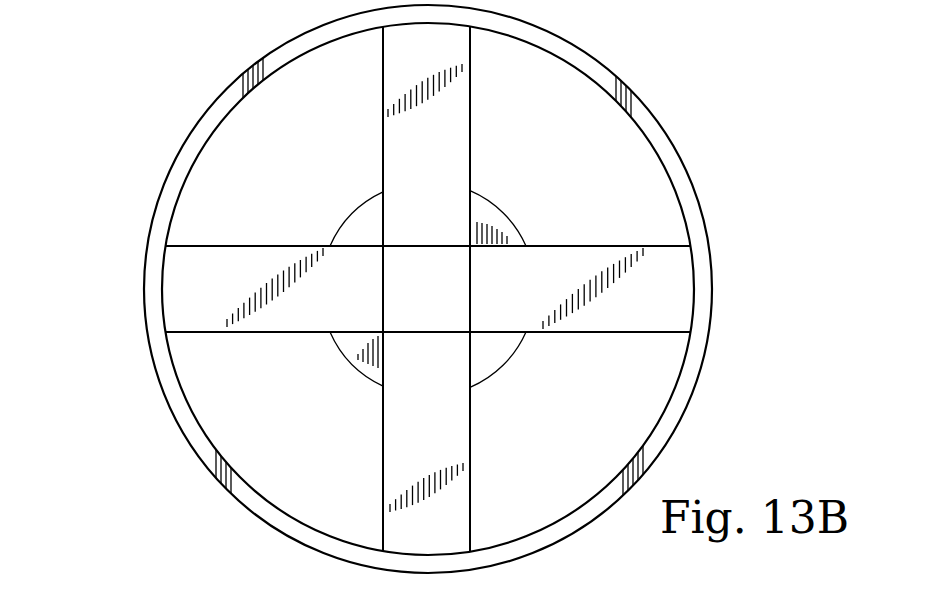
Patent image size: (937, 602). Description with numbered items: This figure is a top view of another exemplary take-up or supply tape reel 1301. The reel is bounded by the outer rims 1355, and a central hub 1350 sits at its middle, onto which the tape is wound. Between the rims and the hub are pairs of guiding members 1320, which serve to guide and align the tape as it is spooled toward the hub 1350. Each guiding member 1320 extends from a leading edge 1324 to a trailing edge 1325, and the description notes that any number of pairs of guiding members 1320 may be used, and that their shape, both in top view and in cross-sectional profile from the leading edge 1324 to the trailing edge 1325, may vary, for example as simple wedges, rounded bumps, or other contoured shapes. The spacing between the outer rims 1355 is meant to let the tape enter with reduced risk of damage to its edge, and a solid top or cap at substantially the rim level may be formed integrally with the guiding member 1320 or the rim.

The reel 1301 is at (713, 121).
The guiding member 1320 is at (172, 283).
The leading edge 1324 is at (472, 116).
The trailing edge 1325 is at (382, 126).
The hub 1350 is at (504, 218).
The outer rim 1355 is at (700, 228).